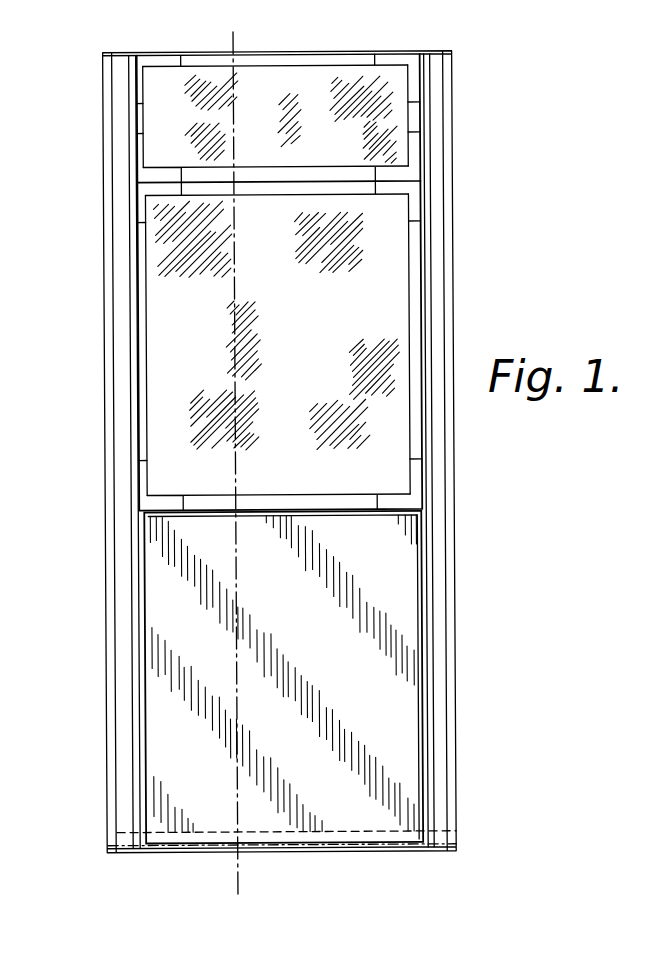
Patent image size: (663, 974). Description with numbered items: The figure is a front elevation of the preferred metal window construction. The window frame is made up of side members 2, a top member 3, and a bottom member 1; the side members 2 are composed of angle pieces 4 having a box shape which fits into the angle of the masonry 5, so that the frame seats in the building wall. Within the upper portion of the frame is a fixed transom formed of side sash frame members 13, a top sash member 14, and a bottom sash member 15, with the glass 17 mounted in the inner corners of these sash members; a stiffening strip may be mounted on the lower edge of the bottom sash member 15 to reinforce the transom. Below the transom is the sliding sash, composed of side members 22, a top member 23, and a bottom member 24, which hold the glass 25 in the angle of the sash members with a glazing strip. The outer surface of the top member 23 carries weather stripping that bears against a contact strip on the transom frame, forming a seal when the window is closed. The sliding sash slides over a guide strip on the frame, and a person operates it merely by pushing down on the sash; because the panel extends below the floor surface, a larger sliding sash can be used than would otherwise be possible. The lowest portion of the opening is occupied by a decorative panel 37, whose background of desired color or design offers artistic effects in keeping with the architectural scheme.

The bottom member 1 is at (360, 842).
The side members 2 is at (120, 540).
The top member 3 is at (250, 52).
The angle pieces 4 is at (178, 660).
The masonry 5 is at (235, 33).
The side sash frame members 13 is at (234, 108).
The top sash member 14 is at (290, 62).
The bottom sash member 15 is at (340, 175).
The glass 17 is at (300, 97).
The side members 22 is at (317, 345).
The top member 23 is at (314, 184).
The bottom member 24 is at (288, 494).
The glass 25 is at (277, 345).
The decorative panel 37 is at (406, 592).